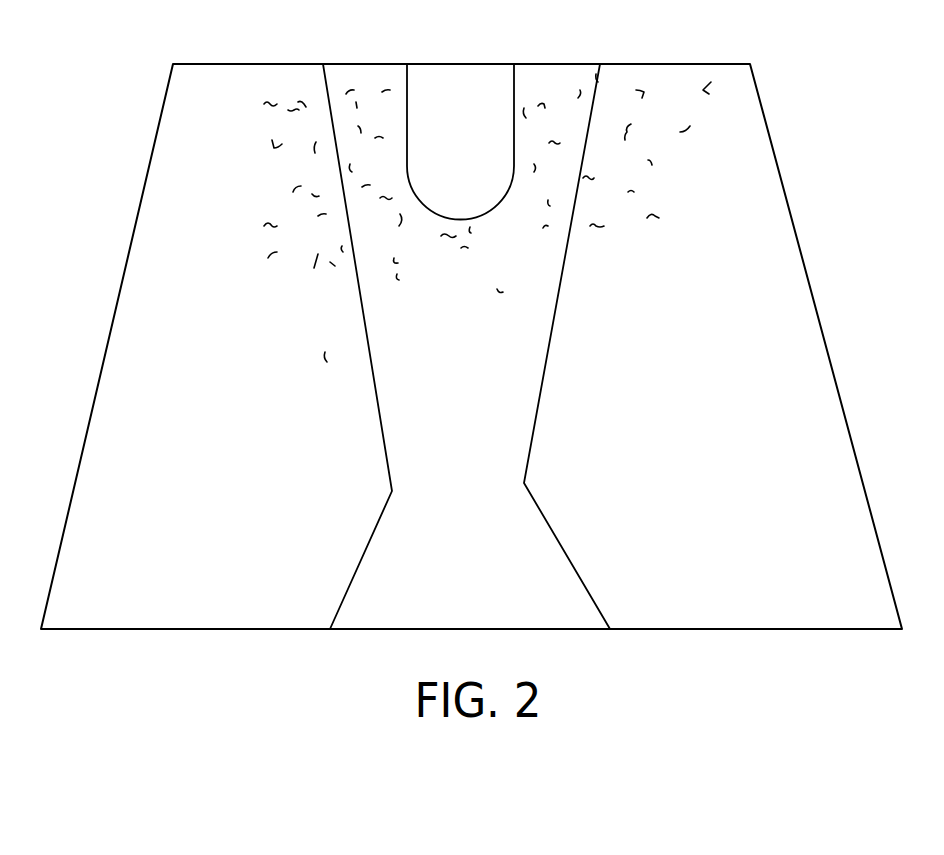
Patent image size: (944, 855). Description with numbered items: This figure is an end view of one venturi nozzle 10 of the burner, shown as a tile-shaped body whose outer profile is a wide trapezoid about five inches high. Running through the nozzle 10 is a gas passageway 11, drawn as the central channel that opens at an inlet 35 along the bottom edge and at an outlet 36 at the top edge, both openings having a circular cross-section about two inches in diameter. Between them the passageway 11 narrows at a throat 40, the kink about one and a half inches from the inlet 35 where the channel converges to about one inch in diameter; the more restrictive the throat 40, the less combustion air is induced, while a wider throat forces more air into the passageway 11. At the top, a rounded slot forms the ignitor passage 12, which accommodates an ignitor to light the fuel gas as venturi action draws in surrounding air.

The venturi nozzle 10 is at (600, 64).
The gas passageway 11 is at (448, 363).
The ignitor passage 12 is at (434, 84).
The inlet 35 is at (509, 613).
The outlet 36 is at (549, 72).
The throat 40 is at (524, 483).